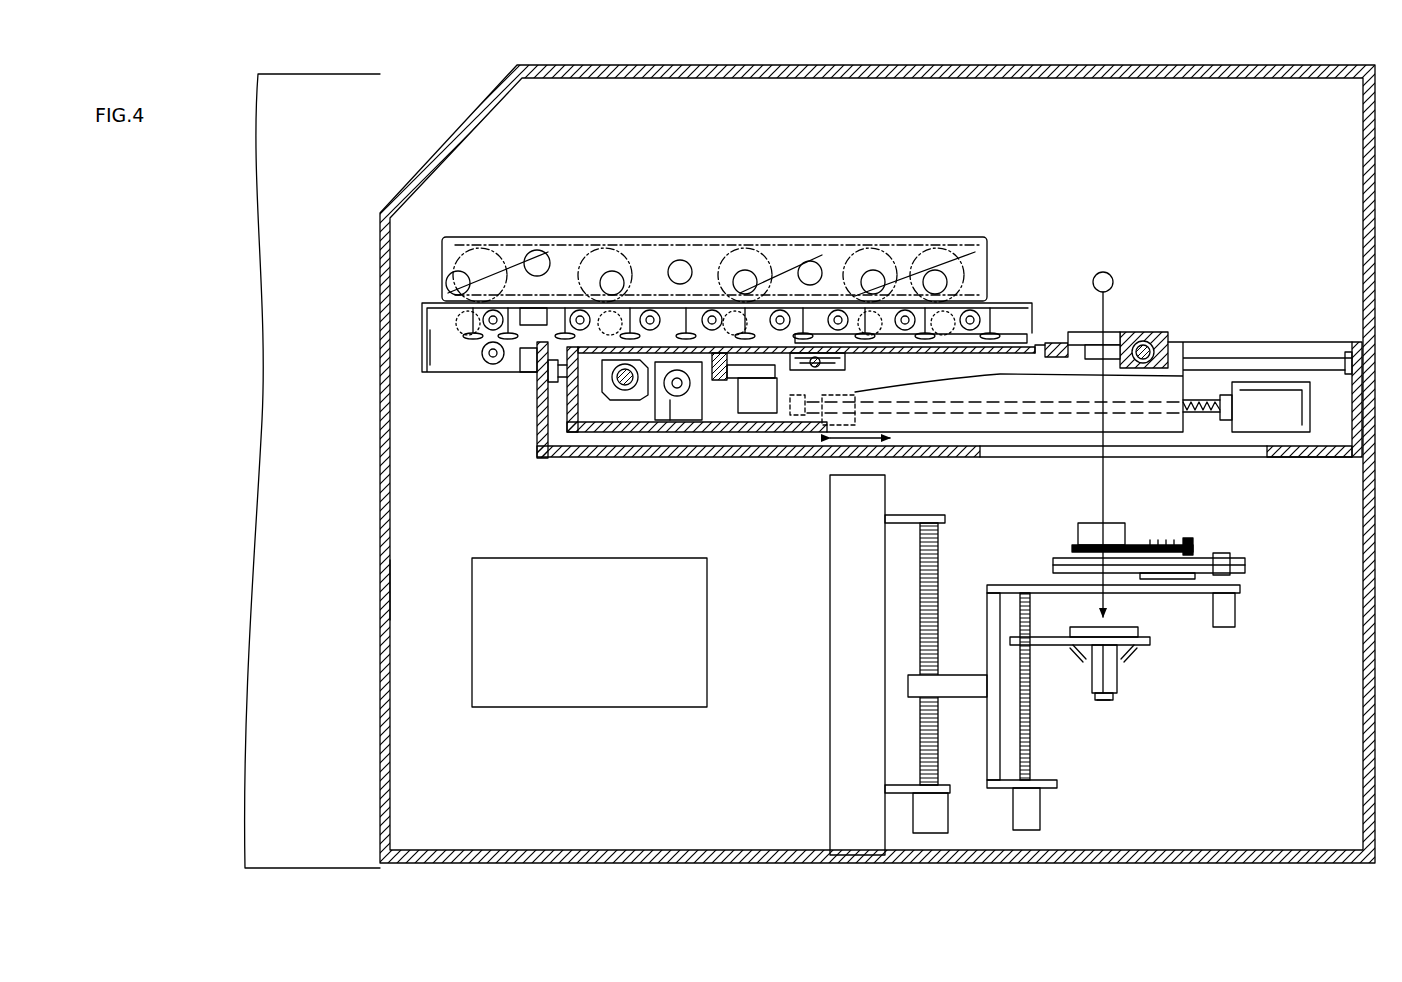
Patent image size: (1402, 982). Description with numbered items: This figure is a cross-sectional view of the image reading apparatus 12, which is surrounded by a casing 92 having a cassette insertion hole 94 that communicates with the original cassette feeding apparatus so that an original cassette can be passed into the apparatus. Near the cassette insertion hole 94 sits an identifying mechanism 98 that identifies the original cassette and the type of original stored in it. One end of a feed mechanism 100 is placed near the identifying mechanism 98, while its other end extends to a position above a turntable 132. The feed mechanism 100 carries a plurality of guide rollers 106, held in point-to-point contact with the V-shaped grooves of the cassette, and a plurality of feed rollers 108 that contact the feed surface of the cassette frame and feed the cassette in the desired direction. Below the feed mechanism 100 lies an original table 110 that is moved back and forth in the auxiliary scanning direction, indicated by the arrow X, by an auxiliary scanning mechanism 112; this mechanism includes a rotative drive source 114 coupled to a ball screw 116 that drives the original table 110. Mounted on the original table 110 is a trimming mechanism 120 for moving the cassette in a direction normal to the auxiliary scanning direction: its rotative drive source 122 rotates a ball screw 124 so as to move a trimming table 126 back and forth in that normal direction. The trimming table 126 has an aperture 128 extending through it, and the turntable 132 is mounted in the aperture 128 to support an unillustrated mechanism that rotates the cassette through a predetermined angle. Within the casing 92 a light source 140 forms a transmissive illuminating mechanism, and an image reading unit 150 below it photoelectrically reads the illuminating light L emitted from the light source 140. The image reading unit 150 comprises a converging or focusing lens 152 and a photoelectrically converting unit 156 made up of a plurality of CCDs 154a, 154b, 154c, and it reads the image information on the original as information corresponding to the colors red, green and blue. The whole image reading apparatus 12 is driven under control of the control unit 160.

The image reading apparatus 12 is at (485, 108).
The casing 92 is at (392, 586).
The cassette insertion hole 94 is at (380, 338).
The identifying mechanism 98 is at (526, 366).
The feed mechanism 100 is at (672, 240).
The guide rollers 106 is at (478, 340).
The feed rollers 108 is at (582, 310).
The original table 110 is at (545, 425).
The auxiliary scanning mechanism 112 is at (1256, 382).
The rotative drive source 114 is at (1292, 425).
The ball screw 116 is at (1205, 415).
The trimming mechanism 120 is at (650, 405).
The rotative drive source 122 is at (682, 412).
The ball screw 124 is at (690, 390).
The trimming table 126 is at (612, 388).
The aperture 128 is at (1098, 335).
The turntable 132 is at (1055, 343).
The light source 140 is at (1106, 272).
The illuminating light L is at (1106, 497).
The image reading unit 150 is at (1245, 600).
The focusing lens 152 is at (1120, 531).
The CCD 154a is at (1073, 665).
The CCD 154b is at (1105, 702).
The CCD 154c is at (1128, 660).
The photoelectrically converting unit 156 is at (1125, 665).
The control unit 160 is at (647, 702).